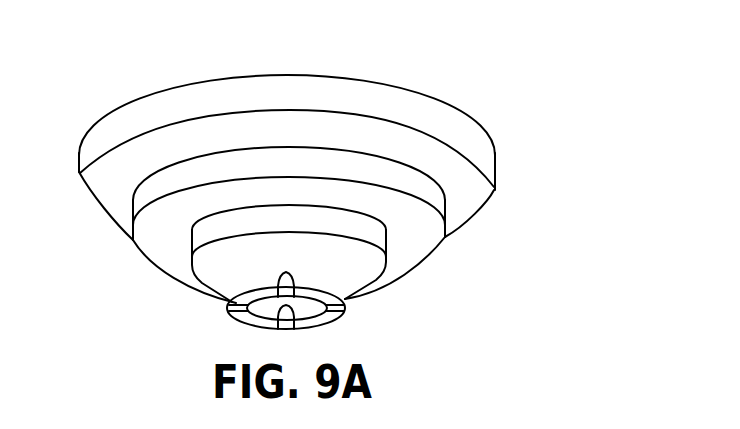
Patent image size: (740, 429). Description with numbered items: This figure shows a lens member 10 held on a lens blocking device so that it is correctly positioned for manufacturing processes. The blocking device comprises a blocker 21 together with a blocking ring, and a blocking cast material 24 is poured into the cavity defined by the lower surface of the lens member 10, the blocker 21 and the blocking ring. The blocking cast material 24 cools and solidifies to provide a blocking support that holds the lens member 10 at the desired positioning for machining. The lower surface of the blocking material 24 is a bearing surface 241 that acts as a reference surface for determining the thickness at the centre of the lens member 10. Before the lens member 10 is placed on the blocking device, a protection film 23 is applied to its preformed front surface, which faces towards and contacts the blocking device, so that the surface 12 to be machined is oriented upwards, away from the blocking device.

The lens member 10 is at (463, 132).
The surface to be machined 12 is at (385, 82).
The protection film 23 is at (494, 190).
The blocking cast material 24 is at (170, 239).
The bearing surface 241 is at (445, 238).
The blocker 21 is at (247, 220).